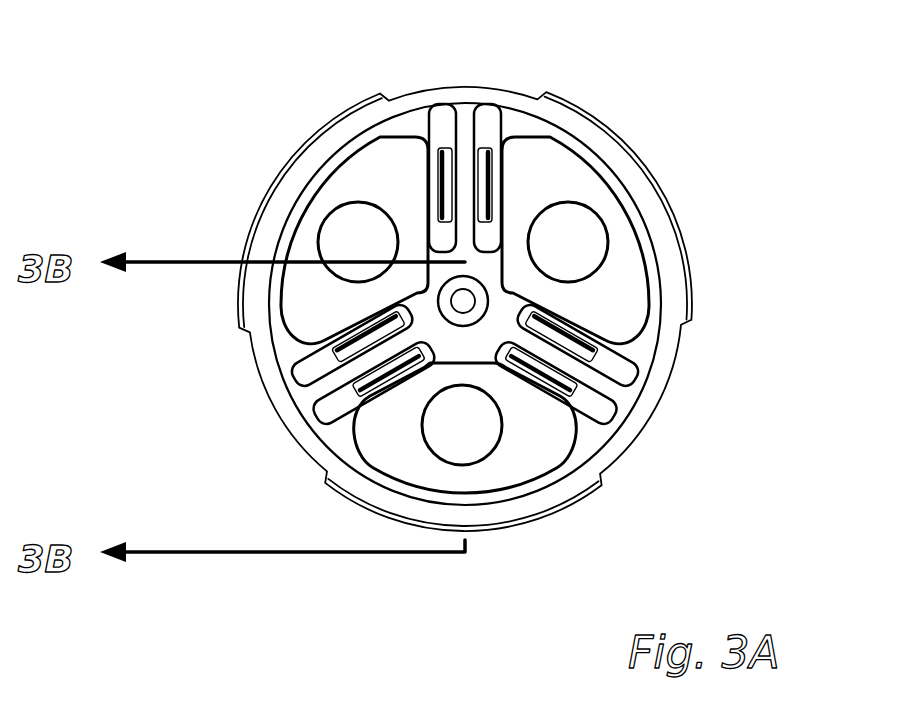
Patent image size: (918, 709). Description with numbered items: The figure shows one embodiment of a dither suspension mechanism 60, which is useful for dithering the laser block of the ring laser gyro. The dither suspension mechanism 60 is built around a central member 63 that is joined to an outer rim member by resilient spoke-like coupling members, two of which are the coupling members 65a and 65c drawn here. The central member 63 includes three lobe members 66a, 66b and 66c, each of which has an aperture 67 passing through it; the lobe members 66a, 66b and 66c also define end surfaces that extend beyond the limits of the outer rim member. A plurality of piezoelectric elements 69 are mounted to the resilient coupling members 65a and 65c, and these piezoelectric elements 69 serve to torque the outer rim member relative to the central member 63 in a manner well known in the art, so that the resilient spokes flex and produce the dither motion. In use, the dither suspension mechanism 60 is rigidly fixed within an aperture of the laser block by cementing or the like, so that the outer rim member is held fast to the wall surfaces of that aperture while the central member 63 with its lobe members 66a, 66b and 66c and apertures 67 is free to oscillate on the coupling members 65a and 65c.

The dither suspension mechanism 60 is at (290, 102).
The central member 63 is at (440, 312).
The resilient spoke-like coupling member 65a is at (605, 384).
The resilient spoke-like coupling member 65c is at (290, 400).
The lobe member 66a is at (622, 290).
The lobe member 66b is at (292, 284).
The lobe member 66c is at (525, 457).
The aperture 67 is at (340, 233).
The piezoelectric element 69 is at (438, 170).